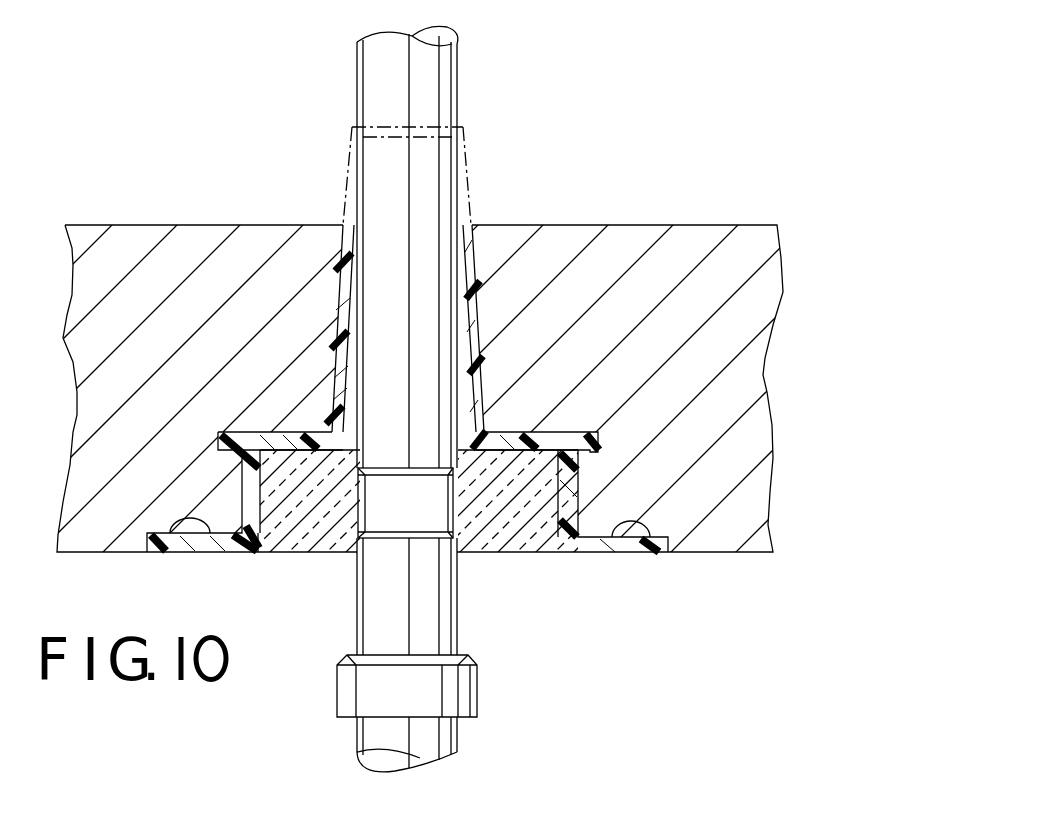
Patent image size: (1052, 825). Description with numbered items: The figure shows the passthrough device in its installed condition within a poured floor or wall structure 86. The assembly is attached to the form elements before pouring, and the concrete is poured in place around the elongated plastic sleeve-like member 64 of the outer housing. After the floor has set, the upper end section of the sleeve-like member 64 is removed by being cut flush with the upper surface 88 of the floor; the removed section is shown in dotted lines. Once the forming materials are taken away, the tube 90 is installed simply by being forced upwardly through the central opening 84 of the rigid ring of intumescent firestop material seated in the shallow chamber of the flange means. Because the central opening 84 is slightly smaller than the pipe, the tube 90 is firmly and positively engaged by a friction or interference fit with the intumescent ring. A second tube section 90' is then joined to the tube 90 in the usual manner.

The tube 90 is at (470, 398).
The sleeve-like member 64 is at (468, 171).
The upper surface of the floor 88 is at (496, 221).
The floor or wall structure 86 is at (633, 233).
The central opening 84 is at (362, 495).
The second tube section 90' is at (461, 701).